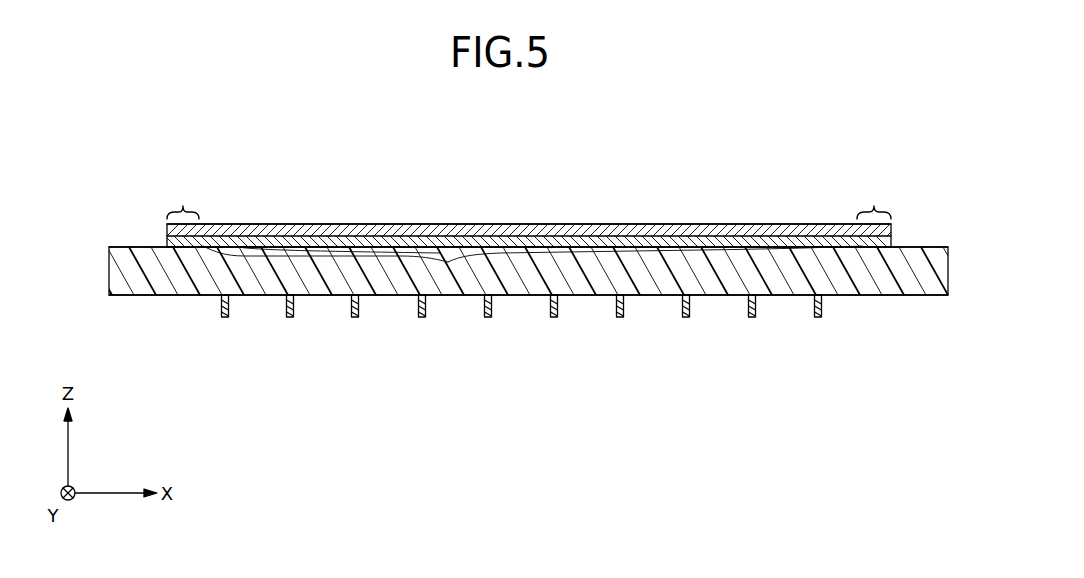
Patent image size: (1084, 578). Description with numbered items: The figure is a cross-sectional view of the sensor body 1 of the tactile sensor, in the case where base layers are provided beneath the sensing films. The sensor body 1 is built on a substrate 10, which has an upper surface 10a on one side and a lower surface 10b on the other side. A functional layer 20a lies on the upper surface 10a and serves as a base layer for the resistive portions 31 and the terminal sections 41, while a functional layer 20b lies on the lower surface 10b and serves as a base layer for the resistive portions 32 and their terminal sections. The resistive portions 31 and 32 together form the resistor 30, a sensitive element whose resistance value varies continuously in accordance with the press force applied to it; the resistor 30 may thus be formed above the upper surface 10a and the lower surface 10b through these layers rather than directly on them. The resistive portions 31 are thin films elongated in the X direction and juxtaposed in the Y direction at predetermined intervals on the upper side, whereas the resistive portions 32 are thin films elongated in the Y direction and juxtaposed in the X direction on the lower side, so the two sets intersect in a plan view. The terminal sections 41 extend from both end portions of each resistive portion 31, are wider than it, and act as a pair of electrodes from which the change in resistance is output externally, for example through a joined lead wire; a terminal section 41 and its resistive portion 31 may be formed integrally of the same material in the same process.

The sensor body 1 is at (56, 158).
The substrate 10 is at (112, 270).
The upper surface 10a is at (122, 247).
The lower surface 10b is at (122, 295).
The functional layer 20a is at (893, 236).
The functional layer 20b is at (822, 299).
The resistor 30 is at (532, 329).
The resistive portion 31 is at (448, 262).
The resistive portion 32 is at (488, 296).
The terminal section 41 is at (529, 197).